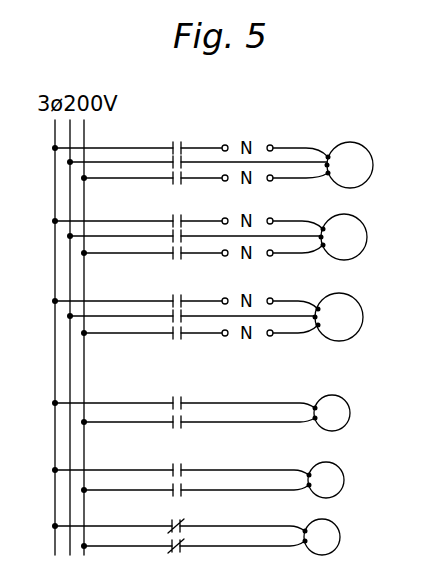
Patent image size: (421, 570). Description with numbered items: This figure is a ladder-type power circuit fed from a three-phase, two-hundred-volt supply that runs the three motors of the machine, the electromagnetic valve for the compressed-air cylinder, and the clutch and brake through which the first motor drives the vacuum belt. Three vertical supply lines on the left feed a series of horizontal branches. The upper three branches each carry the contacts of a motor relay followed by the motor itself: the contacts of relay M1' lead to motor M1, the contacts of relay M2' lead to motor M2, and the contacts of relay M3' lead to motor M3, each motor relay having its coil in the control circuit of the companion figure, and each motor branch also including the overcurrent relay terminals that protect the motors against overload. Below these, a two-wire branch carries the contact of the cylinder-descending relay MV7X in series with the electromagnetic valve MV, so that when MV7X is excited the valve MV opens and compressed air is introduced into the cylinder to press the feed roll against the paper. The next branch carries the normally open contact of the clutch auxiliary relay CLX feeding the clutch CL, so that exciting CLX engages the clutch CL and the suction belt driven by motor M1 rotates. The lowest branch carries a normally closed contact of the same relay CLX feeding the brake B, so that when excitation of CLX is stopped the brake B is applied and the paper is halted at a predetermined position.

The relay M1' is at (191, 149).
The motor M1 is at (320, 165).
The relay M2' is at (188, 223).
The motor M2 is at (317, 237).
The relay M3' is at (185, 303).
The motor M3 is at (315, 317).
The relay for descending of the cylinder MV7X is at (185, 400).
The electromagnetic valve MV is at (332, 413).
The auxiliary relay of the clutch CLX is at (182, 468).
The clutch CL is at (326, 480).
The brake B is at (322, 537).